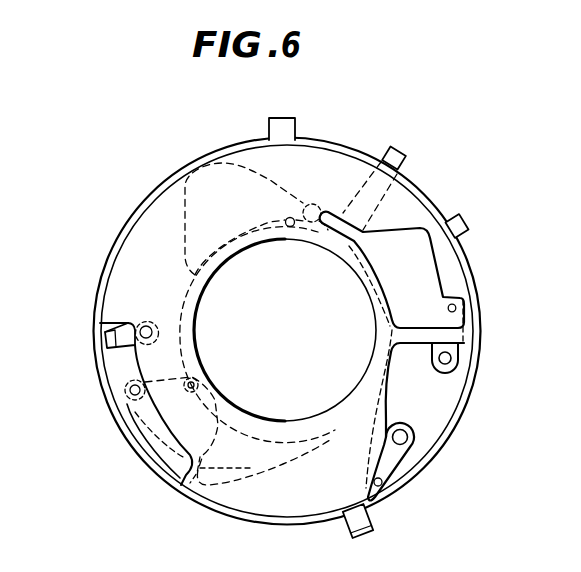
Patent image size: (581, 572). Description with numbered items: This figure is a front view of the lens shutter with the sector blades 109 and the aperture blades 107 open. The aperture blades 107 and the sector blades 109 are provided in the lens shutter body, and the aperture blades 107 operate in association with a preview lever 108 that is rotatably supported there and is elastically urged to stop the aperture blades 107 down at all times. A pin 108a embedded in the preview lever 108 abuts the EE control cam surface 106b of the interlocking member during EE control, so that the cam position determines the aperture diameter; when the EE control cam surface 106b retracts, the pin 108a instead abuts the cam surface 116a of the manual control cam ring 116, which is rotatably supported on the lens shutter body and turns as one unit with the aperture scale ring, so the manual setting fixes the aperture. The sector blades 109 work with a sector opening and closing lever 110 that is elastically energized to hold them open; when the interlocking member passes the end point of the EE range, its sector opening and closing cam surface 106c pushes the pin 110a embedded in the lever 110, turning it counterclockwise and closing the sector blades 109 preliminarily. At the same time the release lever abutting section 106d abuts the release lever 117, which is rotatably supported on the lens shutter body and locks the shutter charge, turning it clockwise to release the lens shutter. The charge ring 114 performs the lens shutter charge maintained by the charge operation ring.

The EE control cam surface 106b is at (390, 407).
The sector opening and closing cam surface 106c is at (402, 224).
The release lever abutting section 106d is at (148, 456).
The aperture blades 107 is at (127, 404).
The preview lever 108 is at (402, 455).
The pin 108a is at (382, 485).
The sector blades 109 is at (185, 214).
The sector opening and closing lever 110 is at (452, 355).
The pin 110a is at (455, 305).
The charge ring 114 is at (460, 224).
The manual control cam ring 116 is at (393, 162).
The cam surface 116a is at (210, 487).
The release lever 117 is at (115, 339).